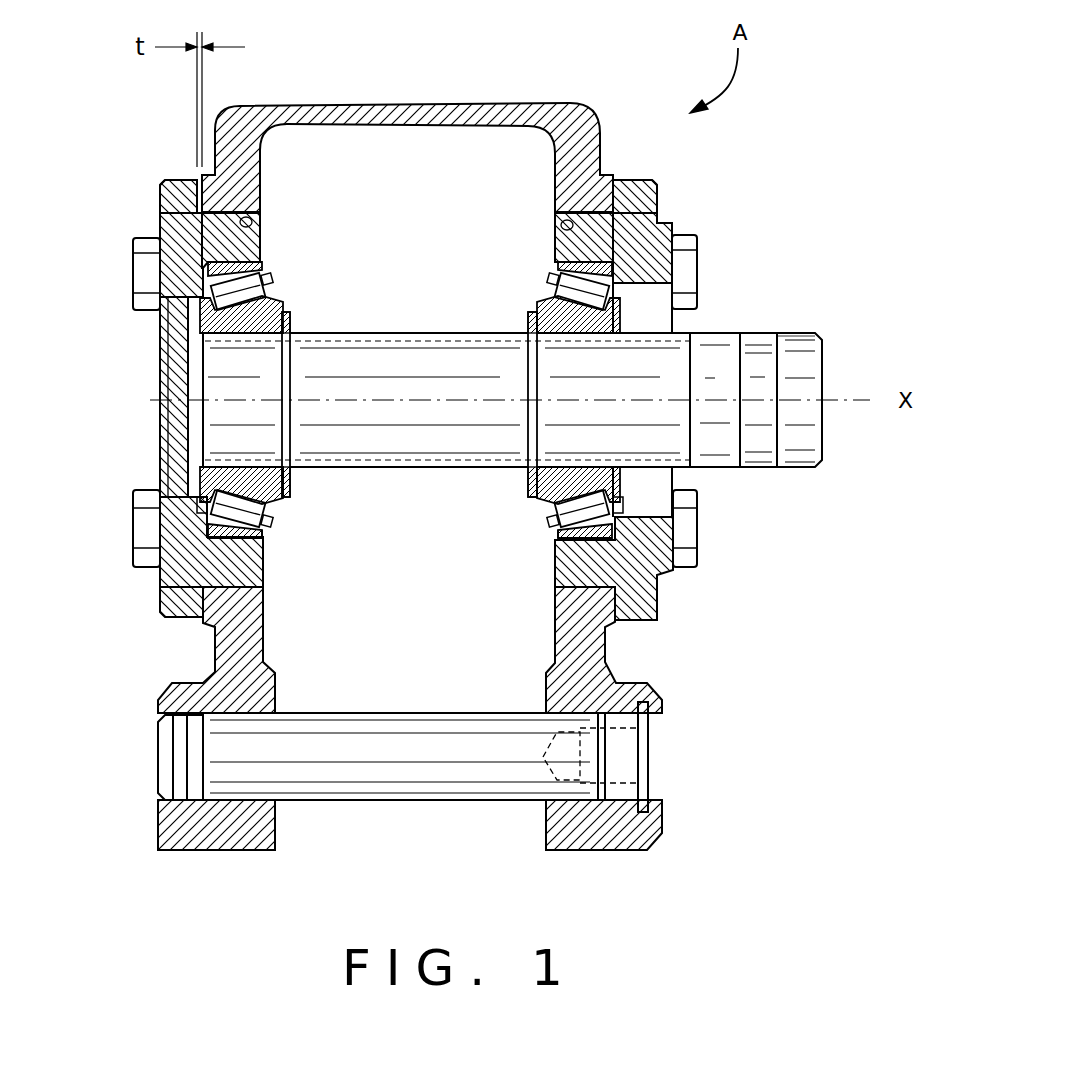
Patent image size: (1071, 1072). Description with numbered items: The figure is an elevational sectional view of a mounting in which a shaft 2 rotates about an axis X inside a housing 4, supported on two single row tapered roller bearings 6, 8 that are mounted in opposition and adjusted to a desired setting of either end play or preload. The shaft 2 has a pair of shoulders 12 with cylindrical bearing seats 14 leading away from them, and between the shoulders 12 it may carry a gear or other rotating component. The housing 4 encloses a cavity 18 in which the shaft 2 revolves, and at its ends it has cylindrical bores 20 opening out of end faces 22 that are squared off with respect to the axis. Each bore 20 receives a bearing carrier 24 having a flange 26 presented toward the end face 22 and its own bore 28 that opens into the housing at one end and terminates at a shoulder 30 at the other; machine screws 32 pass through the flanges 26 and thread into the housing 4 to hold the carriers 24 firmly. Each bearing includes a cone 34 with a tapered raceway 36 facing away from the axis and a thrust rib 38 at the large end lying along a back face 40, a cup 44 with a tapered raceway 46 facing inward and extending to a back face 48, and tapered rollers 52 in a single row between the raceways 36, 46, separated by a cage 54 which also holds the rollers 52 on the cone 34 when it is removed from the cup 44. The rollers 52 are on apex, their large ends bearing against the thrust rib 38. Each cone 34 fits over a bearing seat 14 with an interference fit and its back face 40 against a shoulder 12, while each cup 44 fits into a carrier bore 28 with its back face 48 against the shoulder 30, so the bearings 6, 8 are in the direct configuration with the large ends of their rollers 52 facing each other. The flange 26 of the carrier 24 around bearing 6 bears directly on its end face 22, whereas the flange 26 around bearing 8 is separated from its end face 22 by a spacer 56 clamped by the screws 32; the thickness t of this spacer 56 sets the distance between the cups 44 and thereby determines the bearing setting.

The shaft 2 is at (810, 457).
The housing 4 is at (528, 103).
The tapered roller bearing 6 is at (524, 275).
The tapered roller bearing 8 is at (286, 274).
The shoulder 12 is at (290, 330).
The bearing seat 14 is at (672, 367).
The cavity 18 is at (400, 148).
The housing bore 20 is at (246, 222).
The end face 22 is at (160, 180).
The bearing carrier 24 is at (200, 227).
The flange 26 is at (173, 195).
The carrier bore 28 is at (240, 267).
The carrier shoulder 30 is at (207, 268).
The machine screw 32 is at (143, 298).
The cone 34 is at (237, 470).
The cone raceway 36 is at (293, 470).
The thrust rib 38 is at (282, 508).
The cone back face 40 is at (287, 498).
The cup 44 is at (217, 520).
The cup raceway 46 is at (264, 541).
The cup back face 48 is at (203, 527).
The tapered roller 52 is at (280, 538).
The cage 54 is at (203, 513).
The spacer 56 is at (210, 600).